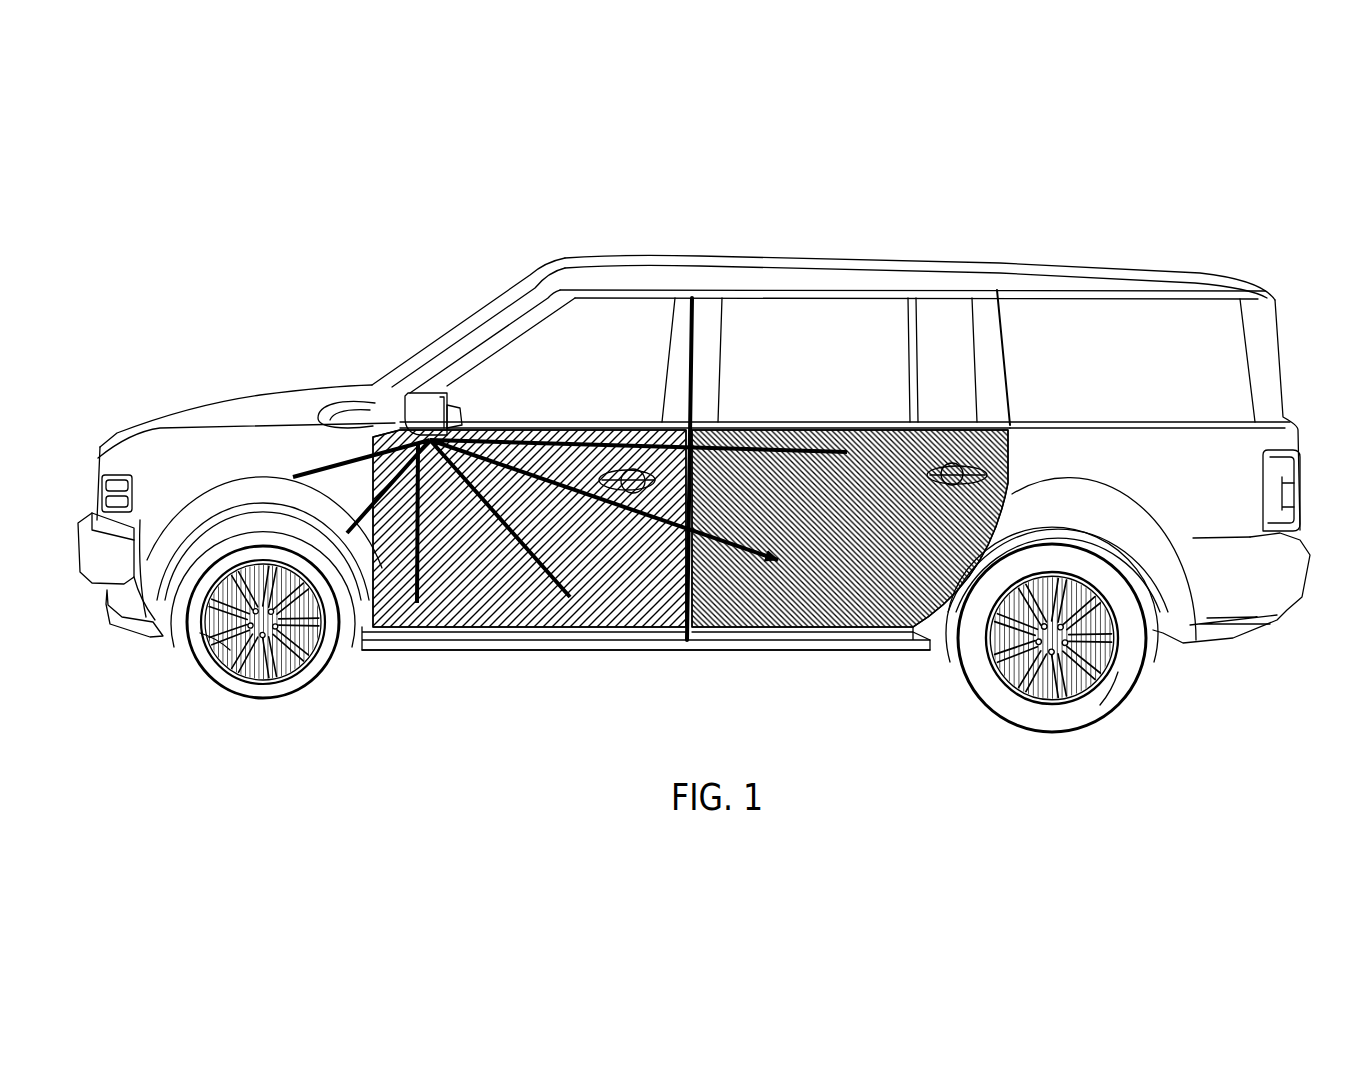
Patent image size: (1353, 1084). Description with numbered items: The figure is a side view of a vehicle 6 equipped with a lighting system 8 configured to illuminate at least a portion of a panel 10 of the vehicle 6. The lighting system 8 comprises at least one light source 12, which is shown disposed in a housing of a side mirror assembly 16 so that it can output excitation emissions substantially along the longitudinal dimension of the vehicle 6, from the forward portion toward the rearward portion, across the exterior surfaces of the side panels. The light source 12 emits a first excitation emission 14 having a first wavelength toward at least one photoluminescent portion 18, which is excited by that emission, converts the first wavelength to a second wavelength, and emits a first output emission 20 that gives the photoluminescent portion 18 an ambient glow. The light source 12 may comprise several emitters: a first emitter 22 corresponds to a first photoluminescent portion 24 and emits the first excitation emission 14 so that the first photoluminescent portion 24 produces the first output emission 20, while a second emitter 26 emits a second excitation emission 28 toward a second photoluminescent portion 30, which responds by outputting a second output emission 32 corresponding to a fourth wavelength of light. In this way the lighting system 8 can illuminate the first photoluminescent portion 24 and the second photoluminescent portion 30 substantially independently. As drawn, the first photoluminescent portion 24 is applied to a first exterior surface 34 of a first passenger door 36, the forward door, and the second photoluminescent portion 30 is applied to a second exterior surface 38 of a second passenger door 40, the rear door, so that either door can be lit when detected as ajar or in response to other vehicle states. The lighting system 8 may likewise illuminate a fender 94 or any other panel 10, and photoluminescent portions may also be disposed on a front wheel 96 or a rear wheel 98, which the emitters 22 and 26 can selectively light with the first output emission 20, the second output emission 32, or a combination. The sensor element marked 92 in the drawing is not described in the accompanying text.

The vehicle 6 is at (1034, 176).
The lighting system 8 is at (366, 368).
The panel 10 is at (190, 448).
The light source 12 is at (455, 420).
The first excitation emission 14 is at (333, 470).
The side mirror assembly 16 is at (458, 392).
The photoluminescent portion 18 is at (233, 690).
The first output emission 20 is at (520, 613).
The first emitter 22 is at (455, 420).
The first photoluminescent portion 24 is at (433, 617).
The second emitter 26 is at (455, 420).
The second excitation emission 28 is at (727, 537).
The second photoluminescent portion 30 is at (830, 607).
The second output emission 32 is at (797, 598).
The first exterior surface 34 is at (596, 600).
The first passenger door 36 is at (596, 600).
The second exterior surface 38 is at (895, 625).
The second passenger door 40 is at (895, 625).
The sensor 92 is at (428, 423).
The fender 94 is at (190, 448).
The front wheel 96 is at (197, 638).
The rear wheel 98 is at (1122, 671).